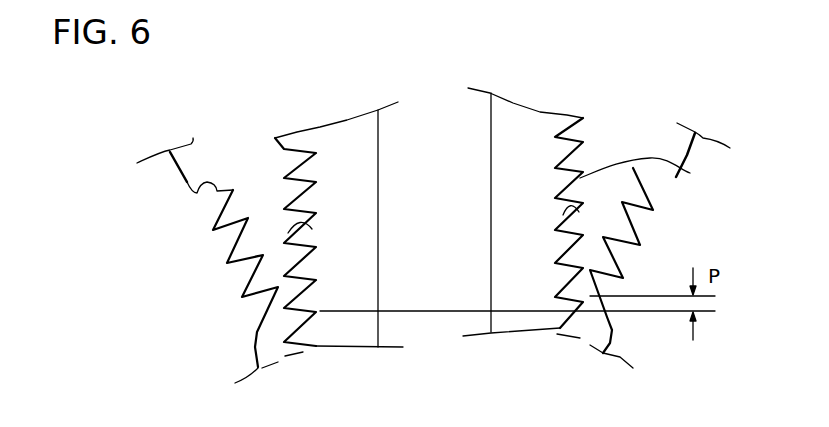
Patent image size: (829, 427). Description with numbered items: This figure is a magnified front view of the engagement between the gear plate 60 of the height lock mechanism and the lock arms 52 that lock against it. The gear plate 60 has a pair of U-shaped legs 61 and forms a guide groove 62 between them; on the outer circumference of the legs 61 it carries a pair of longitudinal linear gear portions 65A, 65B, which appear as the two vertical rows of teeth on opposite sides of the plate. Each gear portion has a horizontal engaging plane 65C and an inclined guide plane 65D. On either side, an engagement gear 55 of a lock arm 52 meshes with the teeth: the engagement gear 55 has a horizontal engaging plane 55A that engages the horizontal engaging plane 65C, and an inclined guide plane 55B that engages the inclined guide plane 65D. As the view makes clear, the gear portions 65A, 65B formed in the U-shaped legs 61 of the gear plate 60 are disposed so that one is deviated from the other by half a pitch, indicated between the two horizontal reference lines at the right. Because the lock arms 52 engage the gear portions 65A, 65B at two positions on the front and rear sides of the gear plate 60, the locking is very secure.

The gear plate 60 is at (386, 139).
The U-shaped leg 61 is at (363, 209).
The guide groove 62 is at (430, 322).
The gear portion 65A is at (583, 157).
The gear portion 65B is at (284, 168).
The horizontal engaging plane 65C is at (317, 200).
The inclined guide plane 65D is at (293, 225).
The lock arm 52 is at (185, 165).
The engagement gear 55 is at (630, 203).
The horizontal engaging plane 55A is at (187, 190).
The inclined guide plane 55B is at (226, 214).